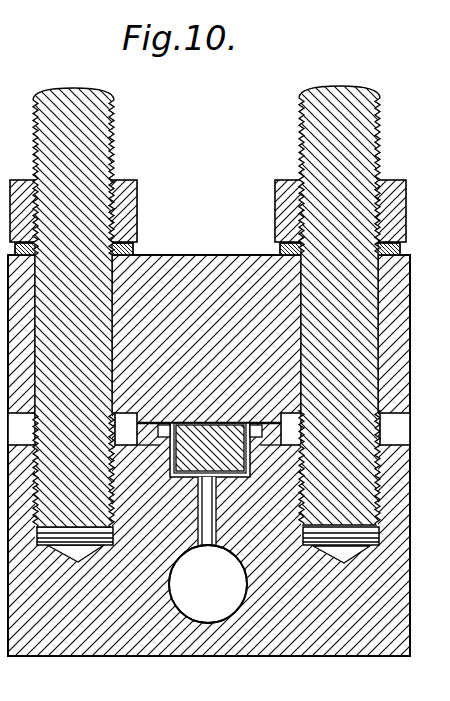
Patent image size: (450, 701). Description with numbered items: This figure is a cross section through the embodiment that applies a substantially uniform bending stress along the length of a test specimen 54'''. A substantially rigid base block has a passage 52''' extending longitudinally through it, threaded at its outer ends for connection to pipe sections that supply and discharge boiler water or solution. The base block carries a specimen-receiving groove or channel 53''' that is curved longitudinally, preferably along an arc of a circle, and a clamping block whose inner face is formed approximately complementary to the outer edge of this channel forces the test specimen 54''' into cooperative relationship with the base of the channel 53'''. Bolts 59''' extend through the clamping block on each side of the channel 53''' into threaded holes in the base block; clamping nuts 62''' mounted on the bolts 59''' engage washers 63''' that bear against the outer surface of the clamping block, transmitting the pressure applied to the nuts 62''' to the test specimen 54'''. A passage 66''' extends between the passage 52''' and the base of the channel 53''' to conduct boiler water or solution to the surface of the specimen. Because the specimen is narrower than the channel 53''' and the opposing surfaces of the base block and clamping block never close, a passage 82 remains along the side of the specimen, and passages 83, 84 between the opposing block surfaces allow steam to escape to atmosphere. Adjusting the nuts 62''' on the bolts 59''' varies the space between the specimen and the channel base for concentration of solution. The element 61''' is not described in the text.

The bolts 59''' is at (229, 306).
The clamping nuts 62''' is at (221, 198).
The washers 63''' is at (207, 247).
The passage 82 is at (300, 448).
The passage 83 is at (150, 423).
The passage 84 is at (300, 424).
The cup 61''' is at (191, 450).
The test specimen 54''' is at (210, 427).
The specimen-receiving groove or channel 53''' is at (183, 512).
The passage 66''' is at (208, 584).
The passage 52''' is at (208, 584).